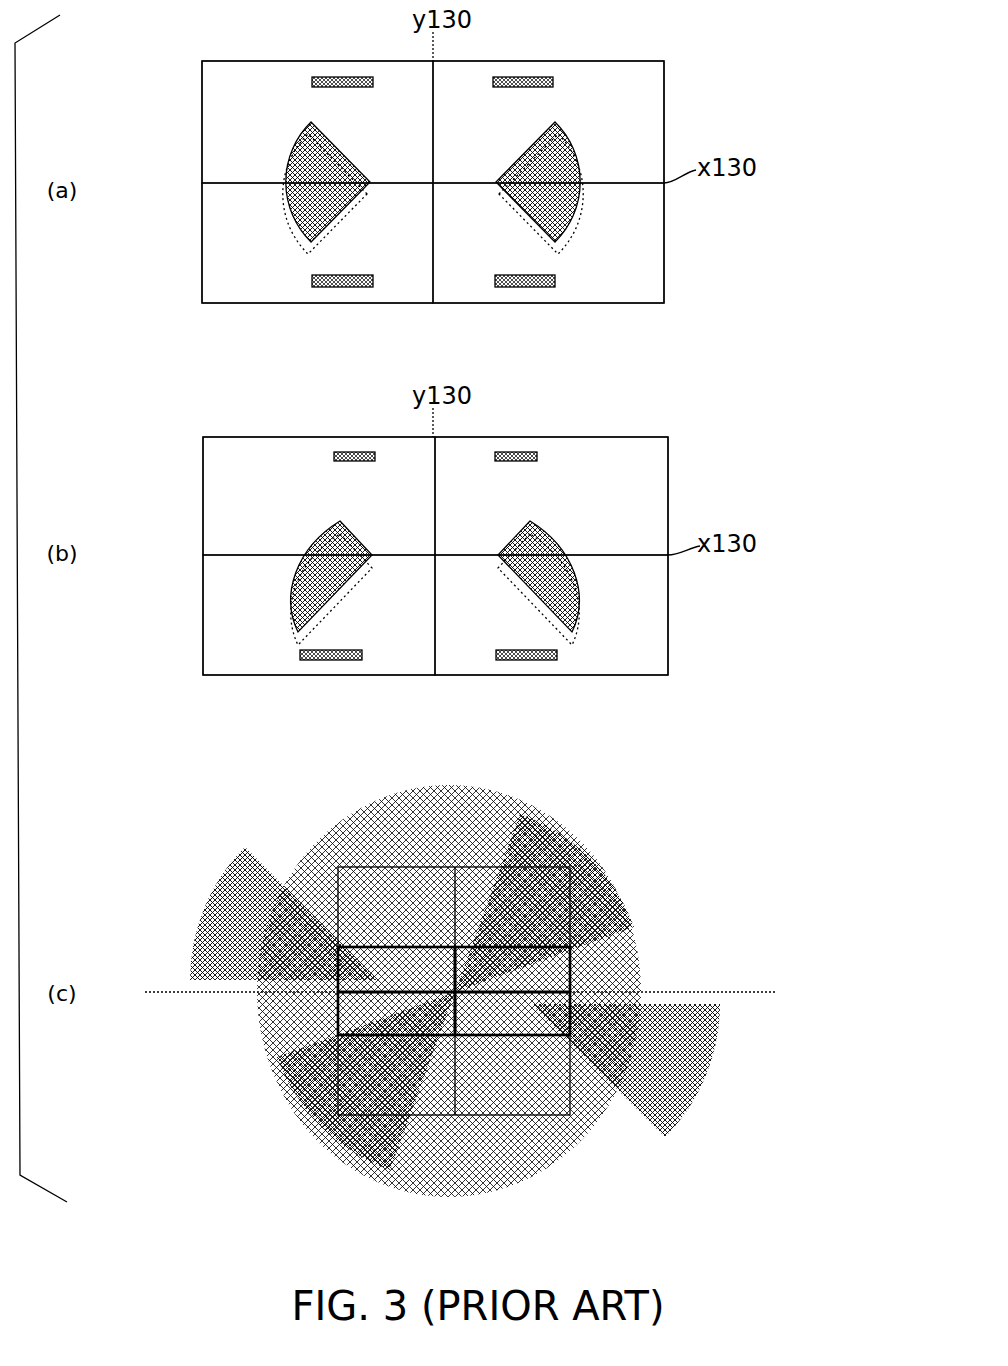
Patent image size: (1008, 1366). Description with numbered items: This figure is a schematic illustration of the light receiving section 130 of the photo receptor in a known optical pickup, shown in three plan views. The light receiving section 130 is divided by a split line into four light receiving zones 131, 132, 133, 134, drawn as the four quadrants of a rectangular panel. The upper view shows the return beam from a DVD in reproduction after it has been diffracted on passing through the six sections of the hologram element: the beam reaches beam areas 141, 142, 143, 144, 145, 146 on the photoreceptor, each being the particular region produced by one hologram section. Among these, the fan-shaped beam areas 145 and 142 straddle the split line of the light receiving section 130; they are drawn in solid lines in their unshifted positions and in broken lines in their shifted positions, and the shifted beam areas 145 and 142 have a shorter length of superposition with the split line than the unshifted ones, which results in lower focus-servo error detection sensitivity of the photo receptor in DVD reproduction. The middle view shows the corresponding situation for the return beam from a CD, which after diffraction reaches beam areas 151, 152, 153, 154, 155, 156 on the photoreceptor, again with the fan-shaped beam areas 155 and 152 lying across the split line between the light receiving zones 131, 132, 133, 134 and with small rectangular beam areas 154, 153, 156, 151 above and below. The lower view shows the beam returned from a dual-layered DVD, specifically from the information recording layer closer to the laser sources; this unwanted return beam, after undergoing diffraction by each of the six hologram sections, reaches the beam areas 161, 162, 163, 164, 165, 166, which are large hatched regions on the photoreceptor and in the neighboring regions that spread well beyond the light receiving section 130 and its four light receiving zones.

The light receiving section 130 is at (653, 48).
The light receiving zone 131 is at (202, 120).
The light receiving zone 132 is at (664, 118).
The light receiving zone 133 is at (664, 238).
The light receiving zone 134 is at (202, 240).
The beam area 141 is at (525, 287).
The beam area 142 is at (566, 135).
The beam area 143 is at (517, 77).
The beam area 144 is at (349, 77).
The beam area 145 is at (302, 135).
The beam area 146 is at (341, 287).
The beam area 151 is at (529, 660).
The beam area 152 is at (548, 530).
The beam area 153 is at (517, 452).
The beam area 154 is at (352, 452).
The beam area 155 is at (322, 530).
The beam area 156 is at (327, 660).
The beam area 161 is at (324, 1073).
The beam area 162 is at (578, 1180).
The beam area 163 is at (692, 1090).
The beam area 164 is at (598, 925).
The beam area 165 is at (338, 815).
The beam area 166 is at (228, 898).